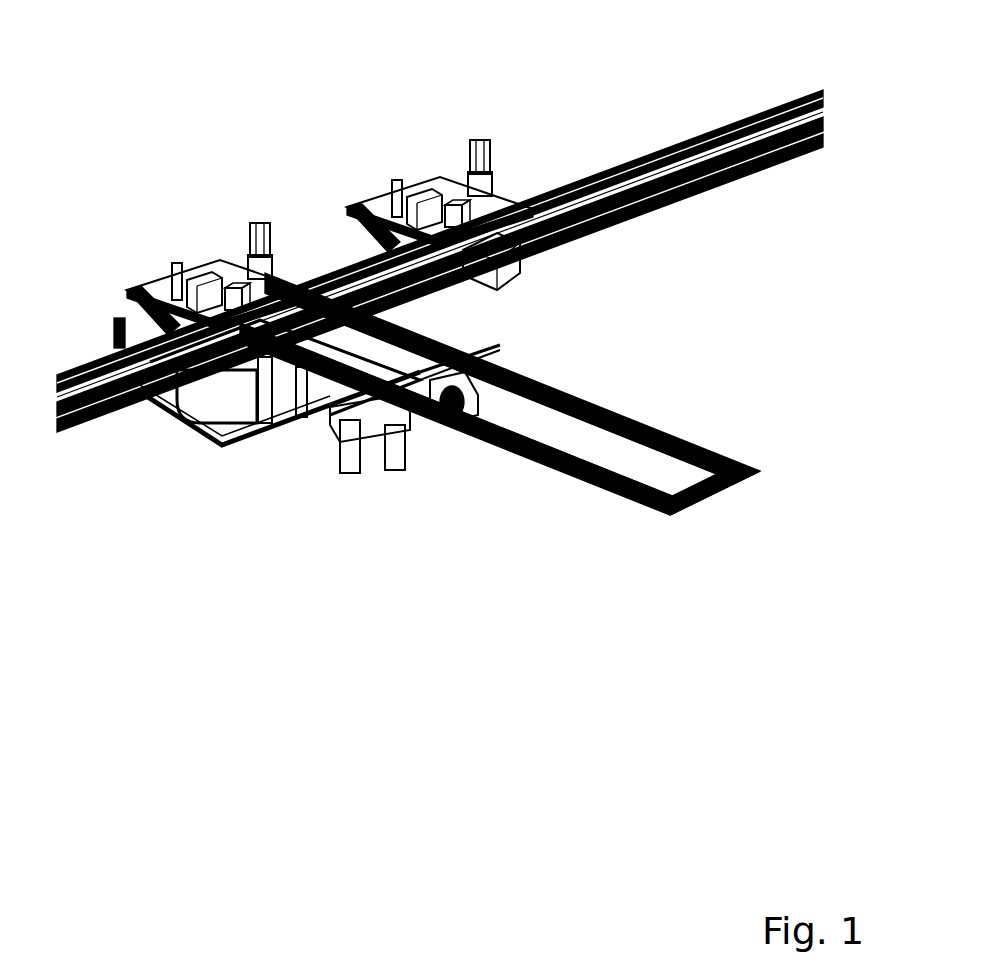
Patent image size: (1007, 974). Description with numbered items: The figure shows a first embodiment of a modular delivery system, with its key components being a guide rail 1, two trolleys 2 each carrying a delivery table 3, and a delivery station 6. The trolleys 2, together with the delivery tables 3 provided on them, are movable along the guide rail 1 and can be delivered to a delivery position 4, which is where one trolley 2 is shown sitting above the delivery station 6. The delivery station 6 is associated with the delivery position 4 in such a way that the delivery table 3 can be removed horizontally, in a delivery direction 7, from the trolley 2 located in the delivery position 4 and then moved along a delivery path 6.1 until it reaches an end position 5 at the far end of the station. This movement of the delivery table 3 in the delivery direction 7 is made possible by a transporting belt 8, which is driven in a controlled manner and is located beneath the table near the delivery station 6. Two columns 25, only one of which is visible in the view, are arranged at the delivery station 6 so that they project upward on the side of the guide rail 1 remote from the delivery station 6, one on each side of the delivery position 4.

The guide rail 1 is at (655, 175).
The trolley 2 is at (167, 327).
The delivery table 3 is at (222, 270).
The delivery position 4 is at (160, 249).
The column 25 is at (113, 325).
The end position 5 is at (765, 451).
The delivery station 6 is at (585, 370).
The delivery path 6.1 is at (568, 465).
The delivery direction 7 is at (597, 537).
The transporting belt 8 is at (420, 380).